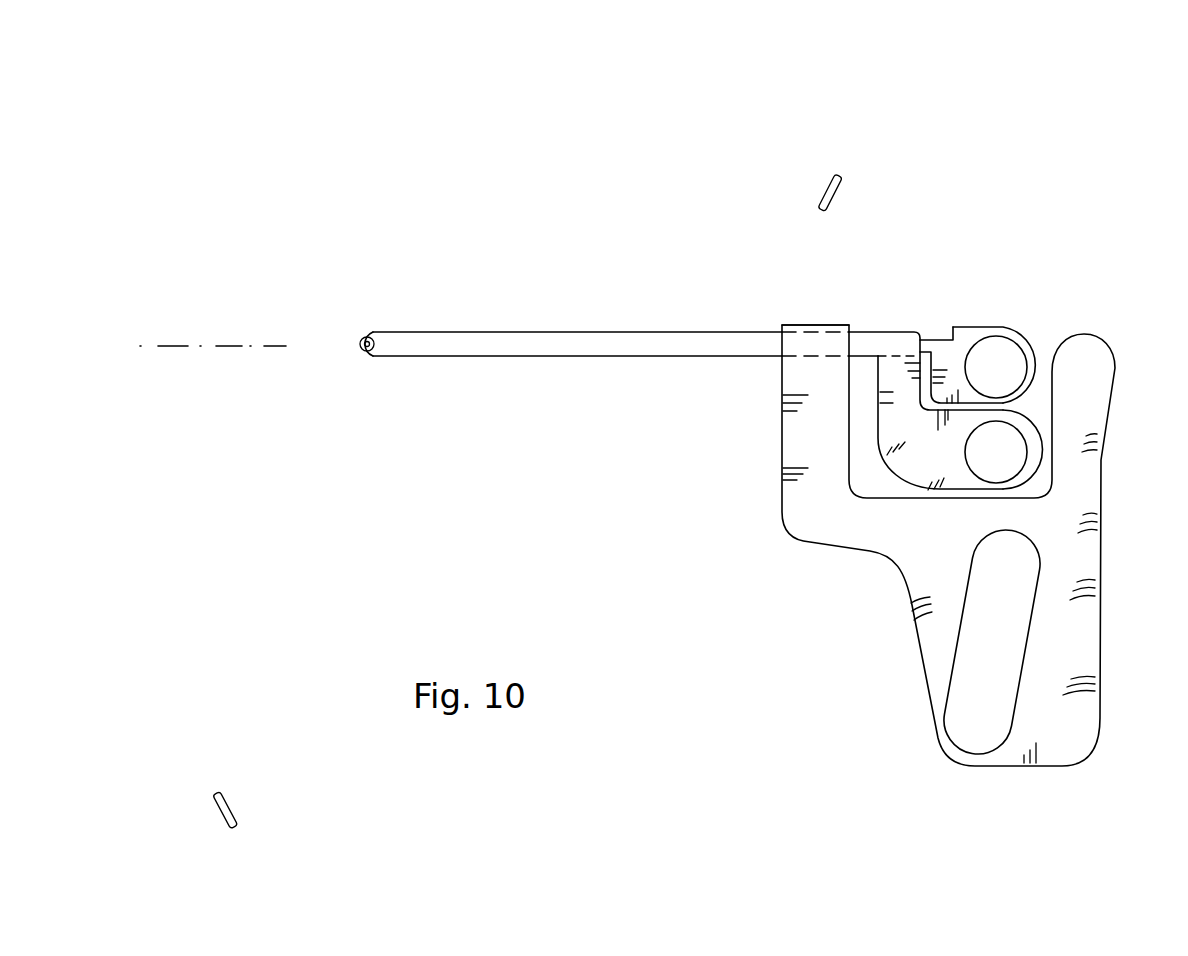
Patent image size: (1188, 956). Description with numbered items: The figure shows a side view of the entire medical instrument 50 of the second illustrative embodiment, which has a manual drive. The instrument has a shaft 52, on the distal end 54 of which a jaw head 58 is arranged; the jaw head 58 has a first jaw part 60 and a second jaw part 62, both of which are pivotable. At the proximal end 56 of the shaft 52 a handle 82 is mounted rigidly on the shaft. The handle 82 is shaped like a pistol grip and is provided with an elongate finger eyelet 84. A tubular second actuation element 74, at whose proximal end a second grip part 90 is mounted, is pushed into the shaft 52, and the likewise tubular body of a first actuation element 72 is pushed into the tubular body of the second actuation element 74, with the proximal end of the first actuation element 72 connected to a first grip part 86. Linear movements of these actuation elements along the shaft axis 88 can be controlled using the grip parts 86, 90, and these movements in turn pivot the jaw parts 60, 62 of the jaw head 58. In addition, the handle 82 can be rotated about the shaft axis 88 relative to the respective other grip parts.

The medical instrument 50 is at (782, 176).
The shaft 52 is at (557, 342).
The distal end 54 is at (373, 332).
The proximal end 56 is at (807, 328).
The jaw head 58 is at (360, 346).
The first jaw part 60 is at (351, 321).
The second jaw part 62 is at (358, 368).
The first actuation element 72 is at (935, 345).
The second actuation element 74 is at (865, 343).
The handle 82 is at (1085, 631).
The finger eyelet 84 is at (975, 668).
The first grip part 86 is at (1030, 347).
The shaft axis 88 is at (176, 346).
The second grip part 90 is at (922, 462).